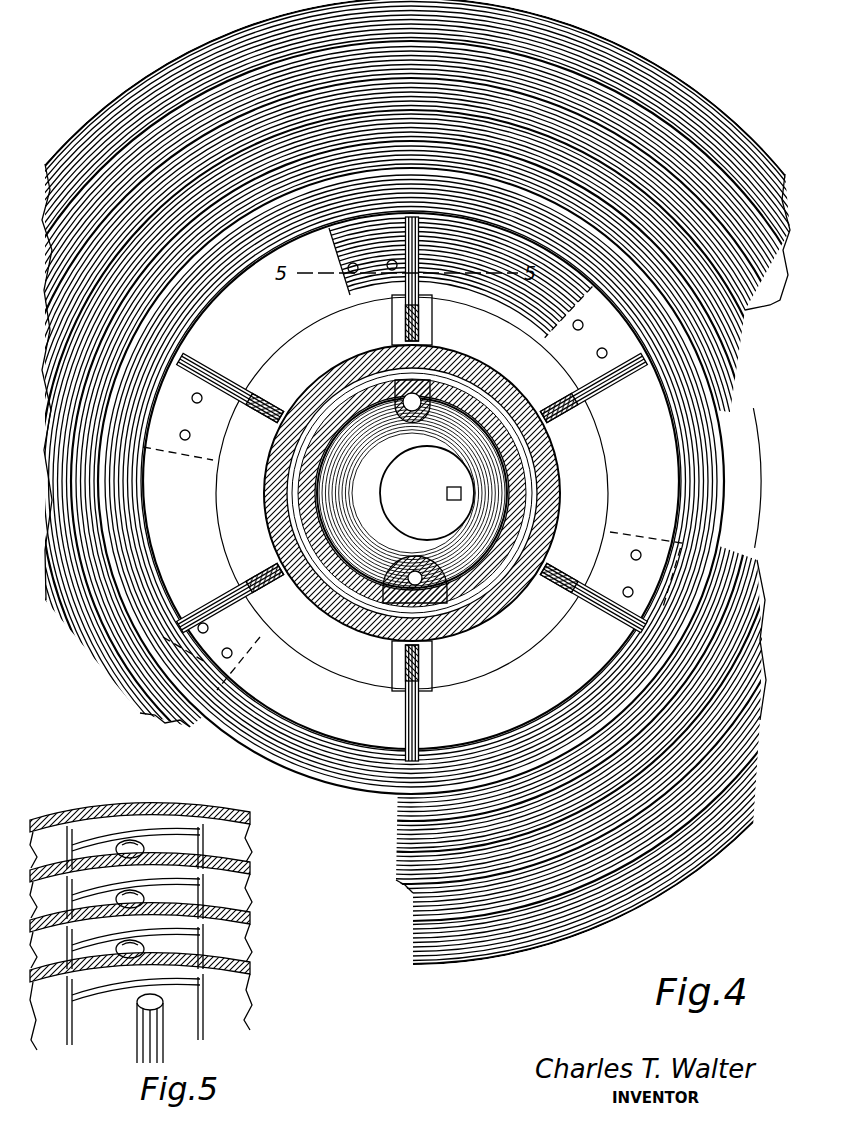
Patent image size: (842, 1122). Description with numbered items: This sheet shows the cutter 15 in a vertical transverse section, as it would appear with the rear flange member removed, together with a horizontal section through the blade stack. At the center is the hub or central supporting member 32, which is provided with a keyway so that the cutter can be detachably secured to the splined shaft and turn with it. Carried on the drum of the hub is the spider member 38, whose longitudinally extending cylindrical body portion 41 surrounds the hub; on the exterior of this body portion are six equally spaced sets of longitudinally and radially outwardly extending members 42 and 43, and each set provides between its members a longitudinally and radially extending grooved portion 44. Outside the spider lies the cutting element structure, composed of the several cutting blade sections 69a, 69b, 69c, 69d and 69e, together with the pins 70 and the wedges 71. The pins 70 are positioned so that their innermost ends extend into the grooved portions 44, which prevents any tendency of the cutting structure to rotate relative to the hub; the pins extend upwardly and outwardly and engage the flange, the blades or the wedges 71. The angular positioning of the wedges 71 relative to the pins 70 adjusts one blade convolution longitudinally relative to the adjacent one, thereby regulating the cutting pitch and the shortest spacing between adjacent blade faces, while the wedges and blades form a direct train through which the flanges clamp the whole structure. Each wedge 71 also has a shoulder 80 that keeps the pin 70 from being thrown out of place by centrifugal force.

In FIG. 4, the wheel 15 is at (130, 96).
In FIG. 4, the hub or central supporting member 32 is at (460, 473).
In FIG. 4, the spider member 38 is at (458, 680).
In FIG. 4, the cylindrical body portion 41 is at (567, 458).
In FIG. 4, the outwardly projecting member 42 is at (338, 312).
In FIG. 4, the outwardly projecting member 43 is at (437, 307).
In FIG. 4, the grooved portion 44 is at (433, 337).
In FIG. 4, the cutting blade section 69a is at (583, 57).
In FIG. 4, the cutting blade section 69b is at (625, 133).
In FIG. 5, the cutting blade section 69b is at (250, 968).
In FIG. 4, the cutting blade section 69c is at (653, 213).
In FIG. 5, the cutting blade section 69c is at (250, 918).
In FIG. 4, the cutting blade section 69d is at (727, 383).
In FIG. 5, the cutting blade section 69d is at (248, 868).
In FIG. 4, the cutting blade section 69e is at (700, 460).
In FIG. 5, the cutting blade section 69e is at (247, 818).
In FIG. 4, the pin 70 is at (418, 222).
In FIG. 5, the pin 70 is at (118, 848).
In FIG. 4, the wedge 71 is at (193, 458).
In FIG. 5, the wedge 71 is at (203, 829).
In FIG. 5, the shoulder 80 is at (188, 830).